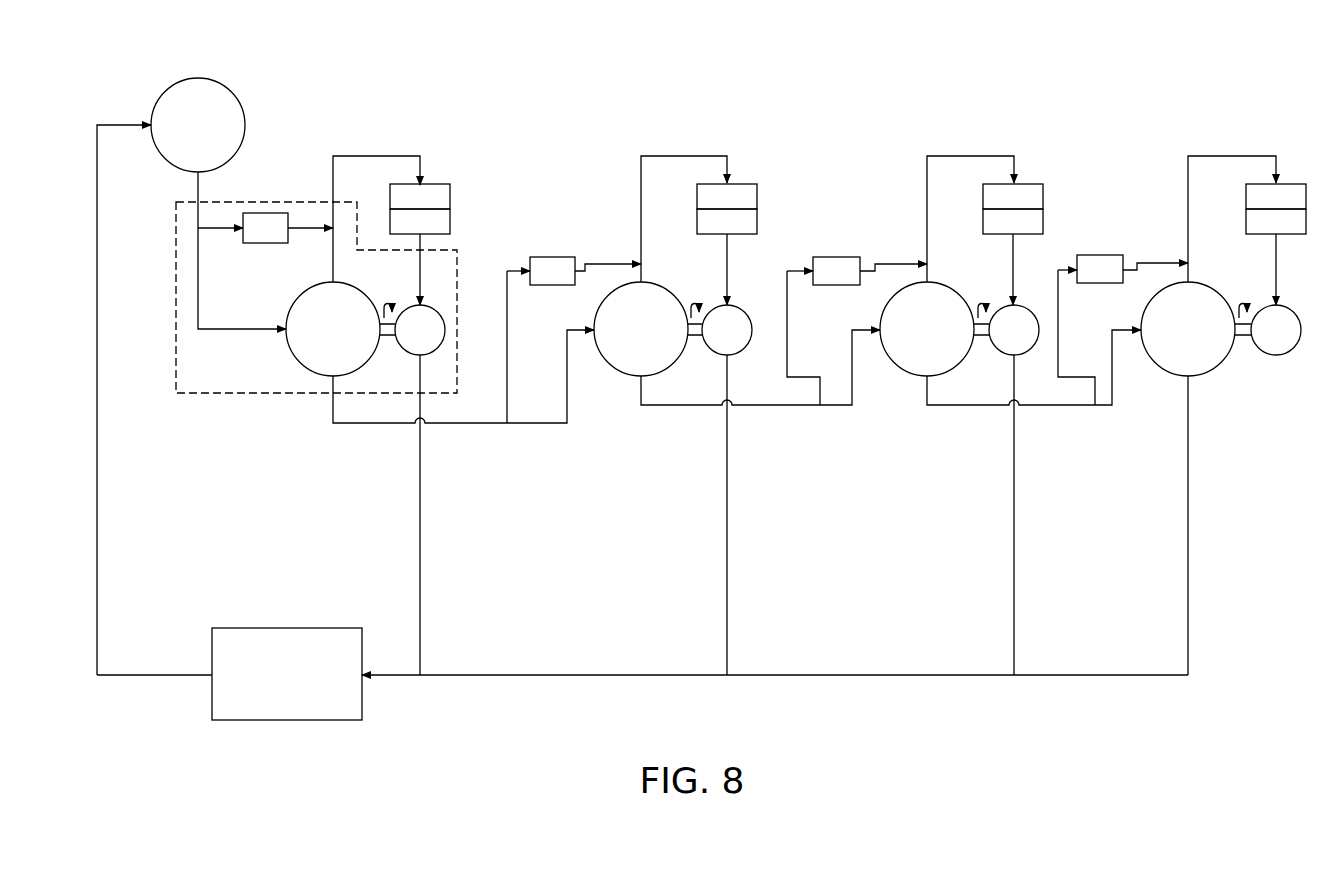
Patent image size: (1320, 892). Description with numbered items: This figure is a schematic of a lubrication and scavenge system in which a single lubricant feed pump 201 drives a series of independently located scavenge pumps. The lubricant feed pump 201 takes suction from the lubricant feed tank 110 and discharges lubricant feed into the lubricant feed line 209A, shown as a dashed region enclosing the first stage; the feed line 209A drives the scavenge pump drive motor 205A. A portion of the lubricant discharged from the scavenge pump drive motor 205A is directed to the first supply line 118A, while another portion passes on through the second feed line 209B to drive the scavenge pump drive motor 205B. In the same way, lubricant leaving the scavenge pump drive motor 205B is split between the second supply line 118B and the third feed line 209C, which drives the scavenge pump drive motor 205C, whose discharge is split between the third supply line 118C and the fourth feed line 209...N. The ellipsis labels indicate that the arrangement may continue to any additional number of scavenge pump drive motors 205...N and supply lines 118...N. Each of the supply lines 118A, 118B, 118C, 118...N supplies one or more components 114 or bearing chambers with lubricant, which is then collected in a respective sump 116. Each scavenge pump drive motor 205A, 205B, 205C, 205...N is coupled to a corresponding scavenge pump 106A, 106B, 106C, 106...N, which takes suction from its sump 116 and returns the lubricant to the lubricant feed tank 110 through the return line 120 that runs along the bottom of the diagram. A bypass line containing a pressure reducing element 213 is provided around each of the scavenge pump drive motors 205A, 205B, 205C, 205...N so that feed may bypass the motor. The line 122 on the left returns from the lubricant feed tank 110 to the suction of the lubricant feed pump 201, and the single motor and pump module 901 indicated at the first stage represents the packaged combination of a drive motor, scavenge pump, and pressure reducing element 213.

The lubricant feed pump 201 is at (198, 125).
The motor and pump module 901 is at (278, 188).
The first supply line 118A is at (370, 156).
The second supply line 118B is at (686, 155).
The third supply line 118C is at (975, 155).
The Nth supply line 118...N is at (1240, 156).
The component 114 is at (848, 196).
The sump 116 is at (848, 257).
The pressure reducing element 213 is at (693, 249).
The lubricant feed line 209A is at (202, 273).
The second feed line 209B is at (466, 423).
The third feed line 209C is at (787, 405).
The fourth feed line 209...N is at (1067, 405).
The scavenge pump drive motor 205A is at (333, 329).
The scavenge pump drive motor 205B is at (641, 329).
The scavenge pump drive motor 205C is at (927, 329).
The scavenge pump drive motor 205...N is at (1188, 478).
The scavenge pump 106A is at (412, 490).
The scavenge pump 106B is at (720, 490).
The scavenge pump 106C is at (1006, 490).
The scavenge pump 106...N is at (1282, 348).
The control line 122 is at (100, 403).
The return line 120 is at (885, 675).
The lubricant feed tank 110 is at (287, 674).